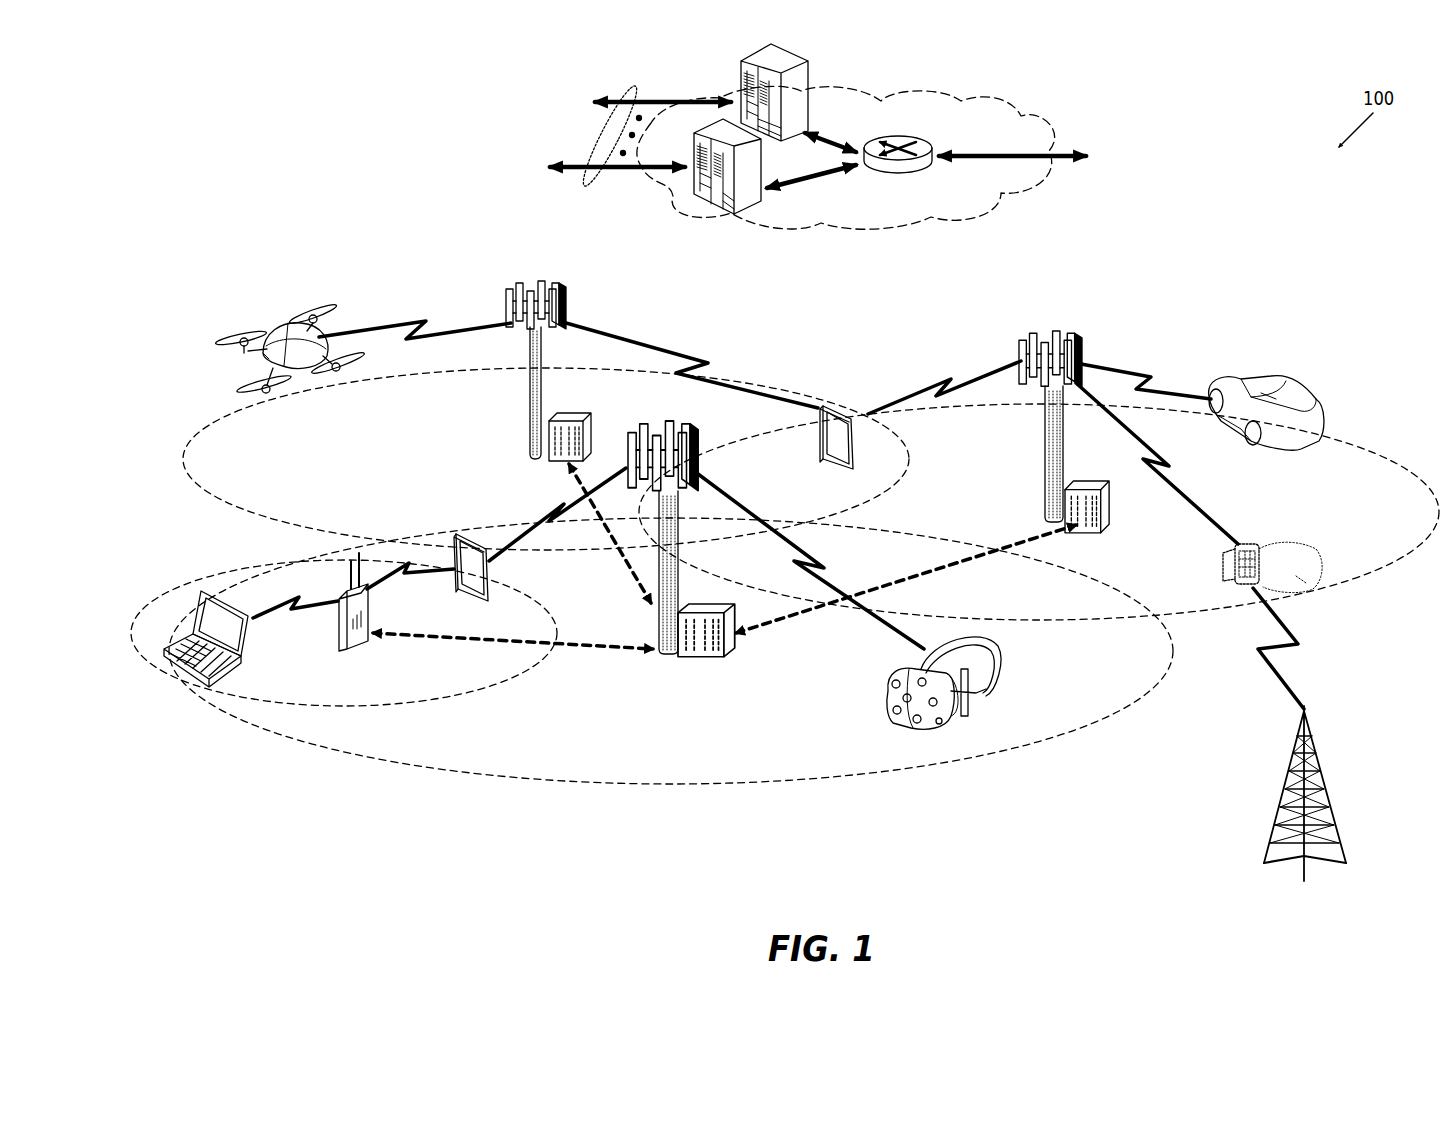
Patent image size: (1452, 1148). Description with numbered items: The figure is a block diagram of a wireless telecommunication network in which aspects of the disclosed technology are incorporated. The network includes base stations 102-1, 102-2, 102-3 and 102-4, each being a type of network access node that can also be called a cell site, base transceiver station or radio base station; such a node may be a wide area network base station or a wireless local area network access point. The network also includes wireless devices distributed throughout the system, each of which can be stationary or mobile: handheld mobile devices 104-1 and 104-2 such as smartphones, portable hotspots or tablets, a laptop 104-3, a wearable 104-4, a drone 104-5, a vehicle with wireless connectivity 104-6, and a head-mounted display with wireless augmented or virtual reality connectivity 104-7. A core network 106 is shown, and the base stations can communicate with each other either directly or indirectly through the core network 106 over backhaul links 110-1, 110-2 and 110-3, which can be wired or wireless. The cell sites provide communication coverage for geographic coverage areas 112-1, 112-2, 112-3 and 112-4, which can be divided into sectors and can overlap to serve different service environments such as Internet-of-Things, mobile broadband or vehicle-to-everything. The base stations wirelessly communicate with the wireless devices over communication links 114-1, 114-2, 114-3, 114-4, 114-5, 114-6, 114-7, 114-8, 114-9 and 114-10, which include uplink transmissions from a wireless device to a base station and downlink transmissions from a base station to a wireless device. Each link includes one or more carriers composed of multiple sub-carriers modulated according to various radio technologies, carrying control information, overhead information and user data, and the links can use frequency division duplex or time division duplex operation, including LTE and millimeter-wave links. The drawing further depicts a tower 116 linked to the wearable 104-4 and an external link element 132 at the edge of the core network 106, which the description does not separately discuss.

The base station 102-1 is at (667, 652).
The base station 102-2 is at (525, 408).
The base station 102-3 is at (1045, 440).
The base station 102-4 is at (340, 637).
The handheld mobile device 104-1 is at (534, 573).
The handheld mobile device 104-2 is at (820, 440).
The laptop 104-3 is at (187, 678).
The wearable 104-4 is at (1242, 542).
The drone 104-5 is at (298, 380).
The vehicle with wireless connectivity 104-6 is at (1292, 392).
The head-mounted display 104-7 is at (1000, 677).
The core network 106 is at (927, 218).
The backhaul link 110-1 is at (407, 634).
The backhaul link 110-2 is at (978, 570).
The backhaul link 110-3 is at (625, 557).
The geographic coverage area 112-1 is at (594, 784).
The geographic coverage area 112-2 is at (471, 694).
The geographic coverage area 112-3 is at (250, 514).
The geographic coverage area 112-4 is at (1340, 436).
The communication link 114-1 is at (824, 567).
The communication link 114-2 is at (555, 512).
The communication link 114-3 is at (263, 615).
The communication link 114-4 is at (410, 577).
The communication link 114-5 is at (430, 322).
The communication link 114-6 is at (700, 360).
The communication link 114-7 is at (940, 388).
The communication link 114-8 is at (1168, 470).
The communication link 114-9 is at (1140, 378).
The communication link 114-10 is at (1283, 650).
The radio tower / antenna 116 is at (1318, 780).
The satellite dish / external network link 132 is at (598, 173).